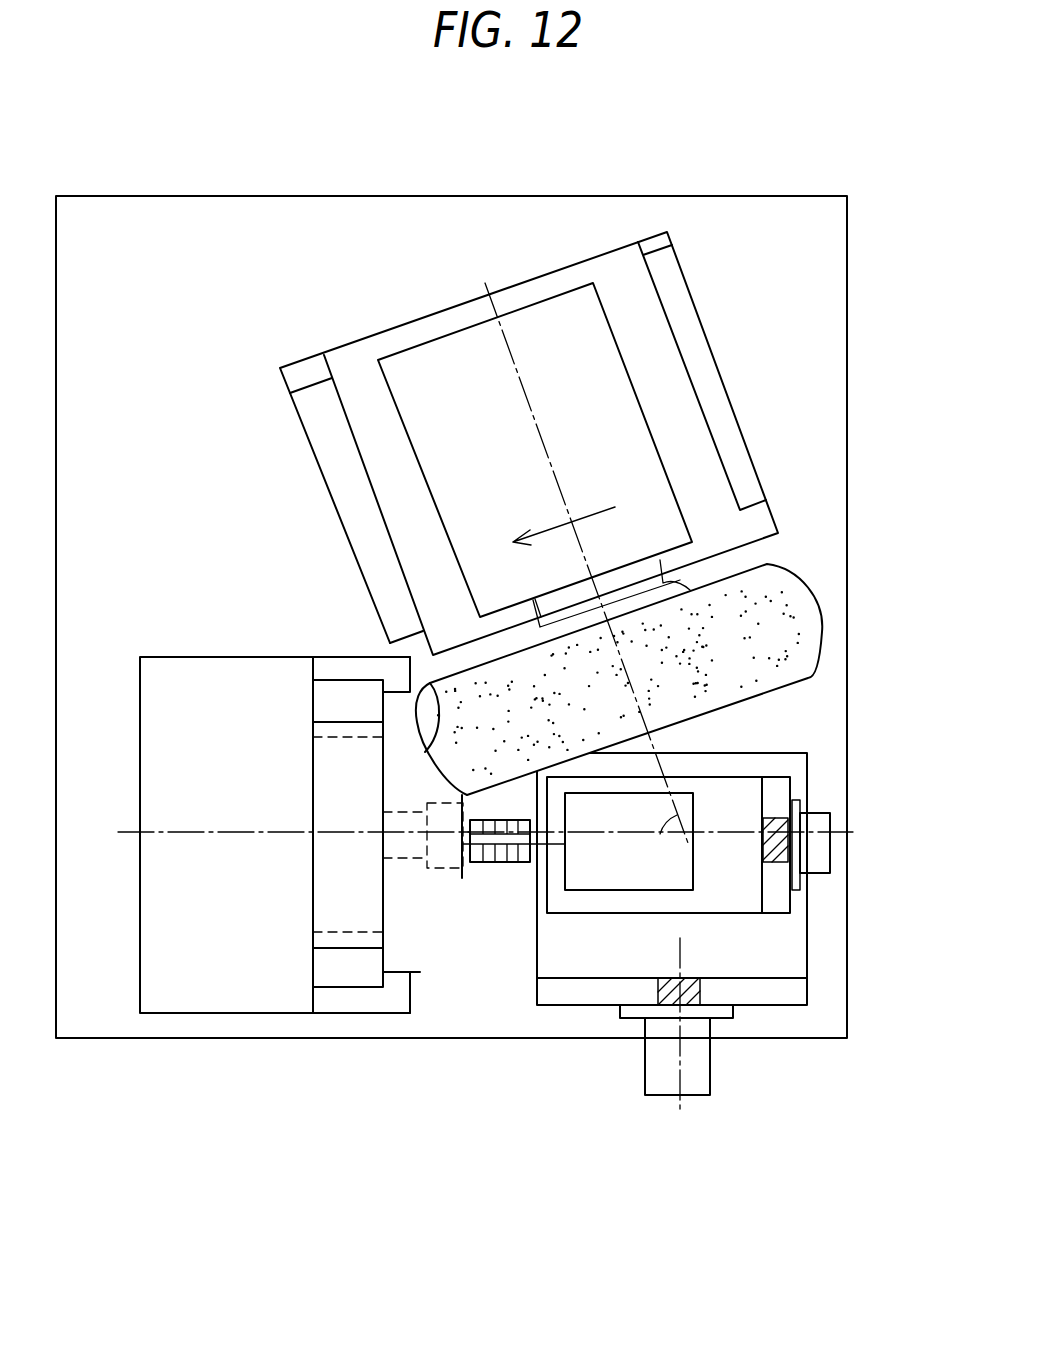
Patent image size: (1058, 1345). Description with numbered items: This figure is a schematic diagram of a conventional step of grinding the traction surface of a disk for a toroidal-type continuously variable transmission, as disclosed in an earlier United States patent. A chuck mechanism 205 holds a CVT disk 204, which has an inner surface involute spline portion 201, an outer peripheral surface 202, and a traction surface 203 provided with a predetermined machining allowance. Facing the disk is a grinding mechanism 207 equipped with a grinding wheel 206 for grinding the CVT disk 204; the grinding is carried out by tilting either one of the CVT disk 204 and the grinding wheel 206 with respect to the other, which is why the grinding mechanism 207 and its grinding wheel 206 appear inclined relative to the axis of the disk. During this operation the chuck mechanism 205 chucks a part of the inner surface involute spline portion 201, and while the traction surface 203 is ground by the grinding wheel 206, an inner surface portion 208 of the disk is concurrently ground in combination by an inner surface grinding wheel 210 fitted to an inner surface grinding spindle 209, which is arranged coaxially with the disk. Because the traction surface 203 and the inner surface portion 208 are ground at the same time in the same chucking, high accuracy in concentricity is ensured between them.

The inner surface involute spline portion 201 is at (405, 845).
The outer peripheral surface 202 is at (462, 878).
The traction surface 203 is at (410, 690).
The CVT disk 204 is at (405, 960).
The chuck mechanism 205 is at (383, 1016).
The grinding wheel 206 is at (820, 605).
The grinding mechanism 207 is at (552, 270).
The inner surface portion 208 is at (447, 823).
The inner surface grinding spindle 209 is at (653, 892).
The inner surface grinding wheel 210 is at (497, 862).